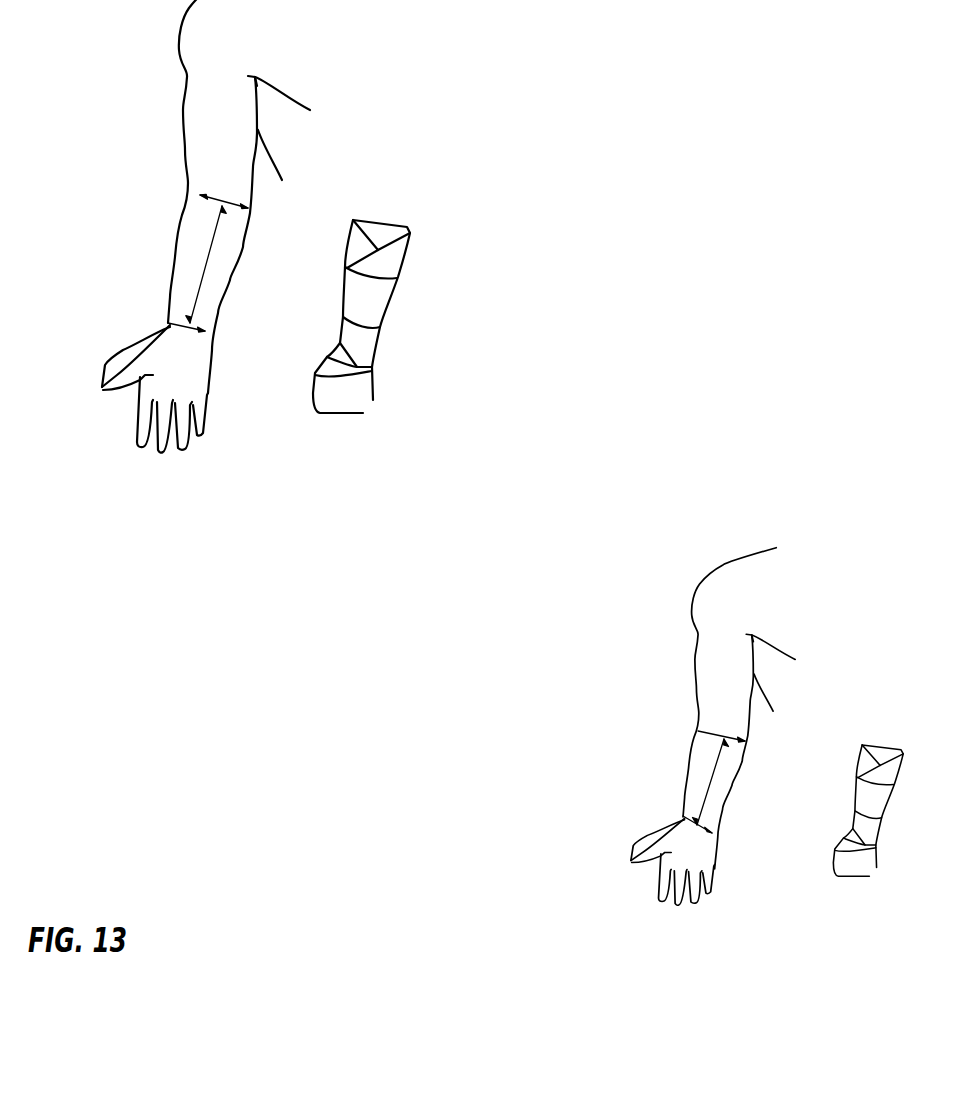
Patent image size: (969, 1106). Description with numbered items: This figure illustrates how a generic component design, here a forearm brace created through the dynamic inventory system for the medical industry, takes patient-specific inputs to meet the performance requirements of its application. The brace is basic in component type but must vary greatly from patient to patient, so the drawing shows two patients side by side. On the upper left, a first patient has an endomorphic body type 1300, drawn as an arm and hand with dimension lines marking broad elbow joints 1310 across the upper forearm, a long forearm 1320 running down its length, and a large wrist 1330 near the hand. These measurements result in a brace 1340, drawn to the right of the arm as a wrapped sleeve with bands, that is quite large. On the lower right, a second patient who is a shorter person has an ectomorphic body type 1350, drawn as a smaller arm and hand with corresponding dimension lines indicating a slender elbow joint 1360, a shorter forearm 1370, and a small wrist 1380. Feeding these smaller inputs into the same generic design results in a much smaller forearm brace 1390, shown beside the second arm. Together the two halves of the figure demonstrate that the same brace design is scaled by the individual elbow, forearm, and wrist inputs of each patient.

The endomorphic body type 1300 is at (208, 393).
The broad elbow joints 1310 is at (200, 195).
The long forearm 1320 is at (207, 265).
The large wrist 1330 is at (166, 326).
The brace 1340 is at (373, 398).
The ectomorphic body type 1350 is at (718, 853).
The slender elbow joint 1360 is at (698, 731).
The shorter forearm 1370 is at (708, 778).
The small wrist 1380 is at (685, 825).
The forearm brace 1390 is at (878, 863).